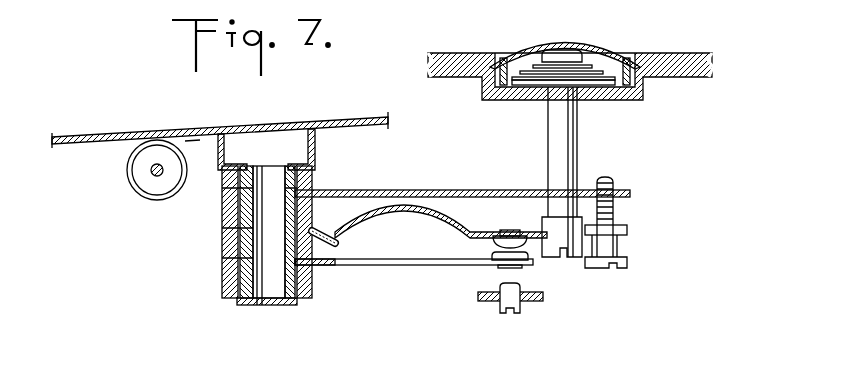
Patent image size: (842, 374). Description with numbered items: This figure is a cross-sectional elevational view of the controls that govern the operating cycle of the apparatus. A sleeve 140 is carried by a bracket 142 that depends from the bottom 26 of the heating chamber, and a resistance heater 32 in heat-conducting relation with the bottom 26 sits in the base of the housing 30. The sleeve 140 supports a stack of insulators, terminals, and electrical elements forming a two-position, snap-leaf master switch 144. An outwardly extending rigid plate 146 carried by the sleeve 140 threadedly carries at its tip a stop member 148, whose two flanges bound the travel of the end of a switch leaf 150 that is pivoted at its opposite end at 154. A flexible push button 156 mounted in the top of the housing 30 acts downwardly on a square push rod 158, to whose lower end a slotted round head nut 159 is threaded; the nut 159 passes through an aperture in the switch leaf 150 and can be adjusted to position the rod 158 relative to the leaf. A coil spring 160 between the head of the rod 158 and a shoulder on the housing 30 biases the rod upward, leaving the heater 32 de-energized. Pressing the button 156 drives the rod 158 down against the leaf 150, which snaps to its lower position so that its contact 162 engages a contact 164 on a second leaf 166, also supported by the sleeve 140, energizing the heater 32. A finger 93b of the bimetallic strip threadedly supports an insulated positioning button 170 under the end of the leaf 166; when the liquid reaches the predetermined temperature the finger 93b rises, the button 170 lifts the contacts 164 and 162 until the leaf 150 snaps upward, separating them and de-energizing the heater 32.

The bottom 26 is at (97, 134).
The housing 30 is at (673, 72).
The resistance heater 32 is at (133, 188).
The finger 93b is at (544, 297).
The sleeve 140 is at (272, 296).
The bracket 142 is at (316, 157).
The master switch 144 is at (418, 272).
The rigid plate 146 is at (400, 189).
The stop member 148 is at (628, 262).
The switch leaf 150 is at (373, 221).
The pivot 154 is at (334, 224).
The push button 156 is at (588, 43).
The push rod 158 is at (572, 138).
The round head nut 159 is at (560, 218).
The coil spring 160 is at (546, 55).
The contact 162 is at (506, 231).
The contact 164 is at (480, 259).
The leaf 166 is at (350, 266).
The insulated positioning button 170 is at (516, 308).